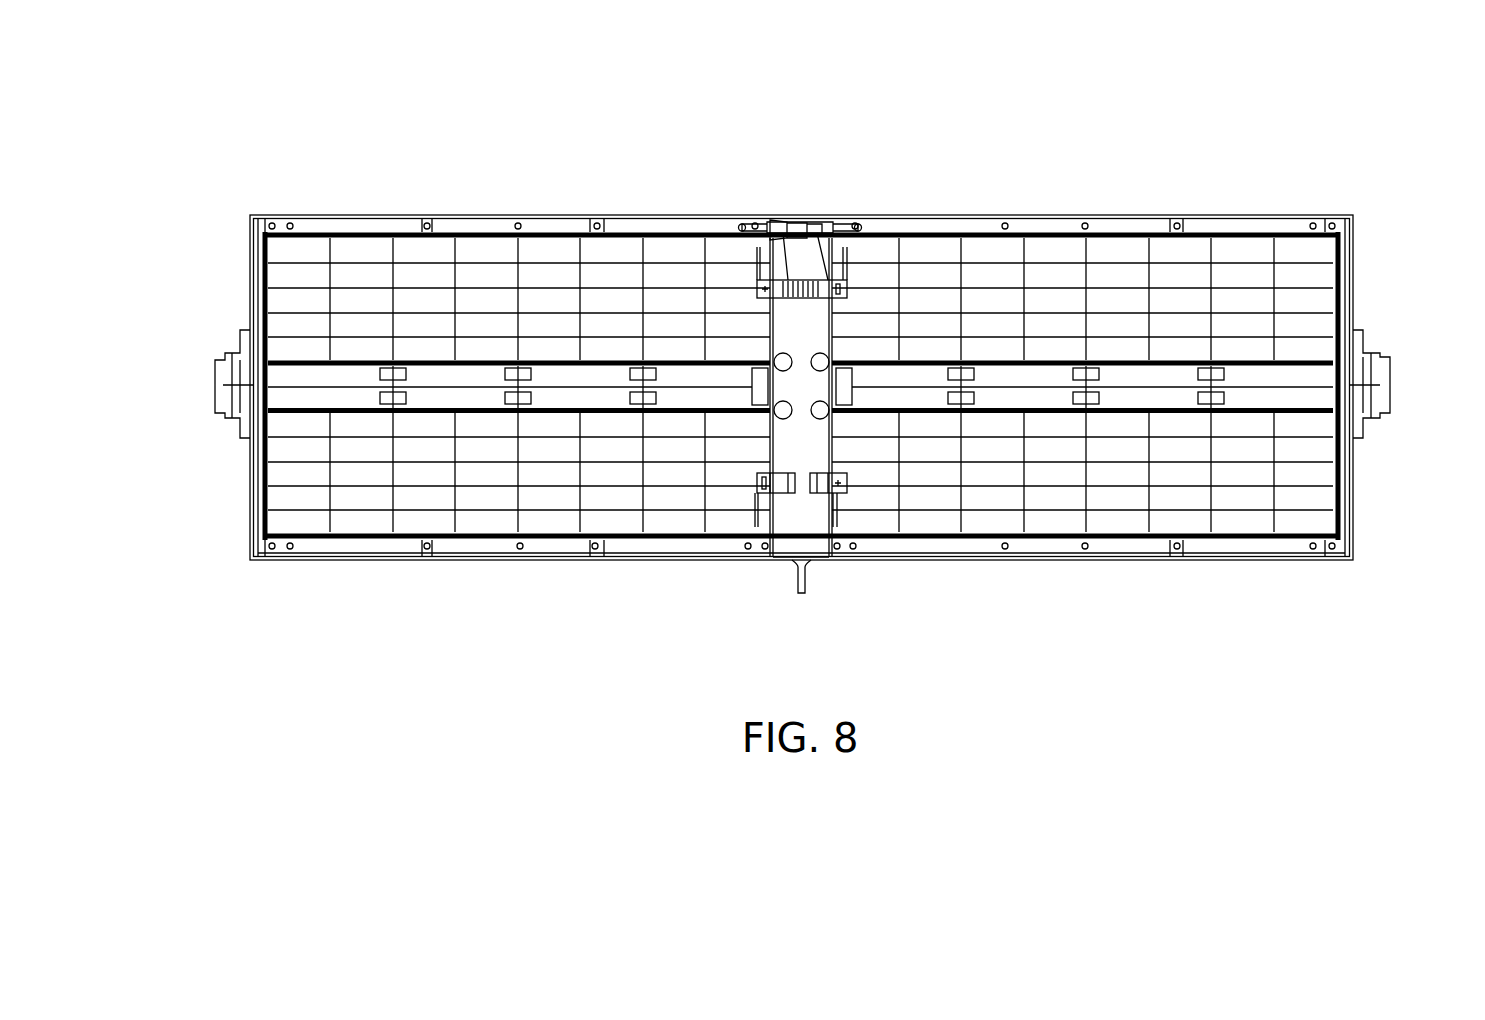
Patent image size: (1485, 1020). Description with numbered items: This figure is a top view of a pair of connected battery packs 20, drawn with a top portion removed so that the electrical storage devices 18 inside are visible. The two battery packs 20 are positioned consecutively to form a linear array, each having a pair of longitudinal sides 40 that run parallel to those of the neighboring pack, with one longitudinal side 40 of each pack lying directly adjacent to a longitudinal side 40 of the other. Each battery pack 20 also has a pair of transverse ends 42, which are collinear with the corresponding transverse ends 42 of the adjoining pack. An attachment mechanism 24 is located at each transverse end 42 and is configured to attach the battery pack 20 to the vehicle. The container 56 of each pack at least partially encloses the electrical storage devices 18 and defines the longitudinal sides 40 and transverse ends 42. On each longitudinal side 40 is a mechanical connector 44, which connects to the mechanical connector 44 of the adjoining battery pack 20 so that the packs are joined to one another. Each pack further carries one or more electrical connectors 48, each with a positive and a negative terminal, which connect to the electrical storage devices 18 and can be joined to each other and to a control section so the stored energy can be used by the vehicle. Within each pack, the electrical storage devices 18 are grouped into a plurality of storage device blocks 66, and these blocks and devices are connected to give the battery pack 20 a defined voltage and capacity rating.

The electrical storage device 18 is at (1330, 393).
The battery pack 20 is at (1255, 558).
The attachment mechanism 24 is at (213, 400).
The longitudinal side 40 is at (597, 218).
The transverse end 42 is at (250, 268).
The mechanical connector 44 is at (797, 228).
The electrical connector 48 is at (780, 232).
The container 56 is at (1153, 558).
The storage device block 66 is at (518, 365).